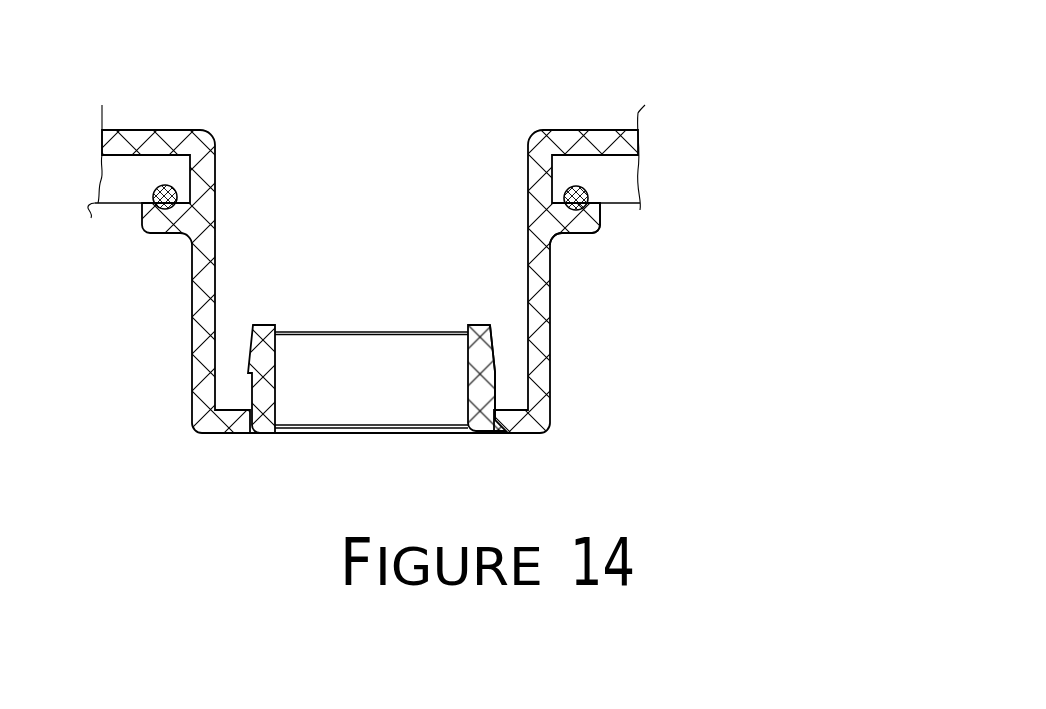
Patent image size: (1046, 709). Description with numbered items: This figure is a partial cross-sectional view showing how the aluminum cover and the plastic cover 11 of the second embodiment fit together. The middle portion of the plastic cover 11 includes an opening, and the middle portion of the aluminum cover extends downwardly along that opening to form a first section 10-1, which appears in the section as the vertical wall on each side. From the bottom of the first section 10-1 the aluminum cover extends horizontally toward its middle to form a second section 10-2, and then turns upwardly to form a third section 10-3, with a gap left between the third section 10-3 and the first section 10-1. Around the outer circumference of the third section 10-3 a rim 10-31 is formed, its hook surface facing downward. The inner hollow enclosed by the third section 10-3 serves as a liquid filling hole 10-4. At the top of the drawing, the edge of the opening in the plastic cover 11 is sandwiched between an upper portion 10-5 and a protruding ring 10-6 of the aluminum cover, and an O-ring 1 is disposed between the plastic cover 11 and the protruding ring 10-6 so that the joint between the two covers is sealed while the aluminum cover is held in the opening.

The O-ring 1 is at (161, 187).
The first section 10-1 is at (528, 308).
The second section 10-2 is at (505, 428).
The third section 10-3 is at (472, 351).
The rim 10-31 is at (492, 370).
The liquid filling hole 10-4 is at (373, 365).
The upper portion 10-5 is at (625, 138).
The protruding ring 10-6 is at (585, 225).
The plastic cover 11 is at (612, 182).